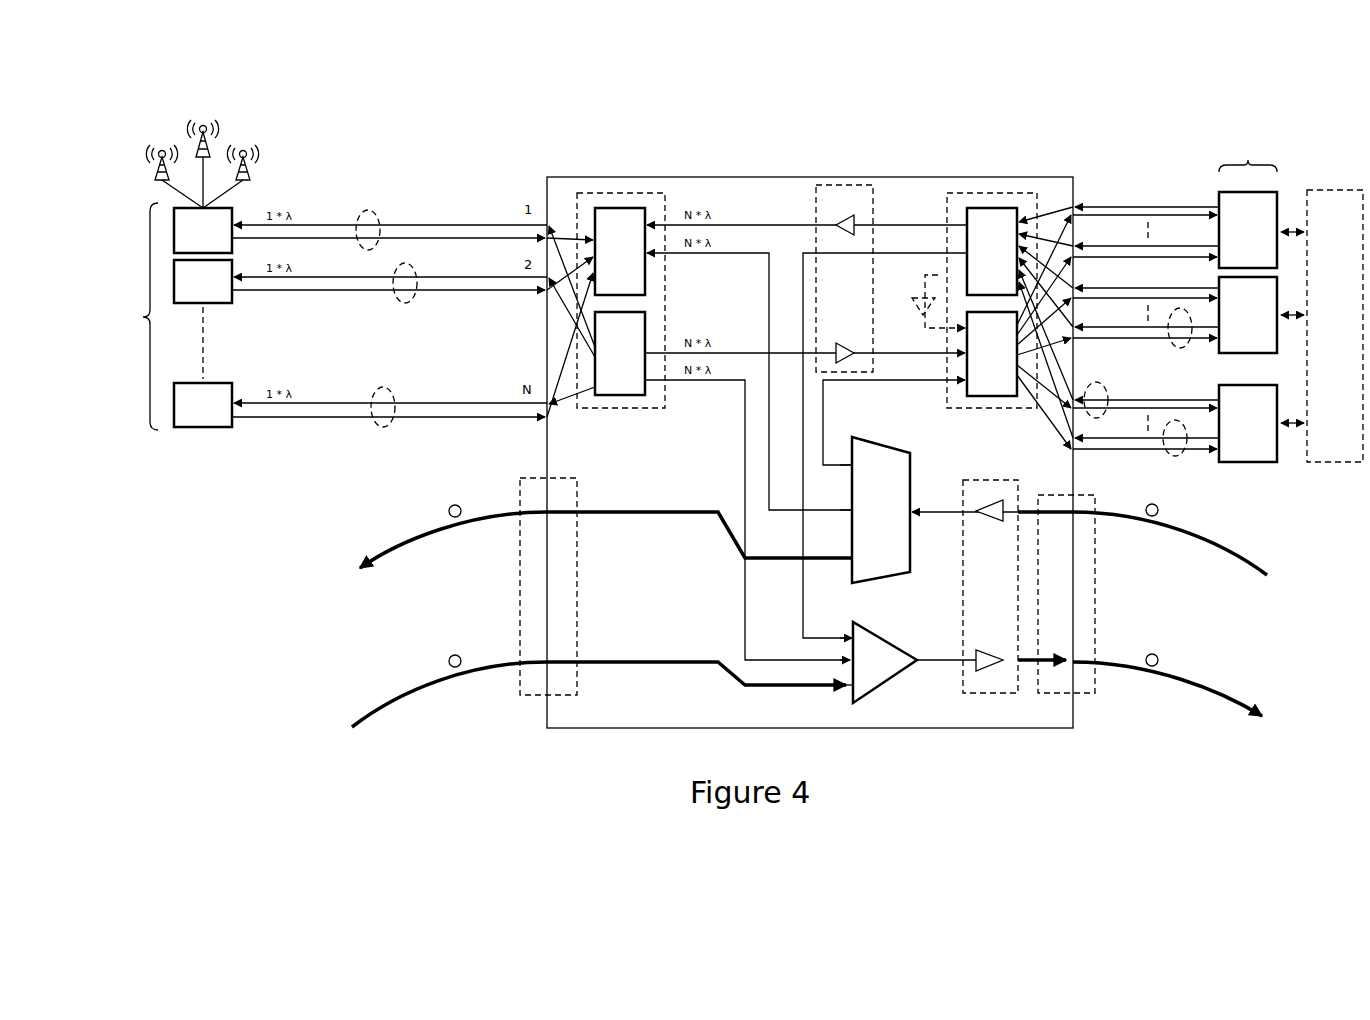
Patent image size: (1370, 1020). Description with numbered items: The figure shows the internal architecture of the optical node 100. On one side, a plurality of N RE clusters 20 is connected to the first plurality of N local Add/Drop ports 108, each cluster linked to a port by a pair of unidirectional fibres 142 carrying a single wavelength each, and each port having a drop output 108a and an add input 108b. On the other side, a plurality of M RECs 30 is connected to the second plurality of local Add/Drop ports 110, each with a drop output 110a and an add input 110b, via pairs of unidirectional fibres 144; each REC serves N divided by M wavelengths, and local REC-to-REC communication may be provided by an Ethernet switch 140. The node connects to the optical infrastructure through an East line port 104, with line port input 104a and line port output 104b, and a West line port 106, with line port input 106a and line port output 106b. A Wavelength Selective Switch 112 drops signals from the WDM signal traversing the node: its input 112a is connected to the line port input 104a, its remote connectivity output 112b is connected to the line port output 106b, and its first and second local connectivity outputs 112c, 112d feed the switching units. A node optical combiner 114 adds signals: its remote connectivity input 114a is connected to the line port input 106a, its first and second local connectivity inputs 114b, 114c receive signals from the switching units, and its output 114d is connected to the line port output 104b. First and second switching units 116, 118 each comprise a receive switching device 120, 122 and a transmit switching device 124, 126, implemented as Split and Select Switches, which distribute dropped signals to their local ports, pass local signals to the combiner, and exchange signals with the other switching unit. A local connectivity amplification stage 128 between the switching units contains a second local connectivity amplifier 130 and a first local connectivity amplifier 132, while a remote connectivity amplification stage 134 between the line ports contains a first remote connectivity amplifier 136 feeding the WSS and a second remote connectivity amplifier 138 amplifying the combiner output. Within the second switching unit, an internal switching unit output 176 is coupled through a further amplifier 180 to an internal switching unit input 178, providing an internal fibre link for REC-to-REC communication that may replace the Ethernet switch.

The RE clusters 20 is at (176, 316).
The RECs 30 is at (1259, 301).
The optical node 100 is at (726, 140).
The East line port 104 is at (1064, 694).
The line port input 104a is at (1077, 514).
The line port output 104b is at (1077, 660).
The West line port 106 is at (521, 696).
The line port input 106a is at (545, 660).
The line port output 106b is at (545, 514).
The first plurality of local Add/Drop ports 108 is at (540, 172).
The drop output 108a is at (546, 222).
The add input 108b is at (546, 292).
The second plurality of local Add/Drop ports 110 is at (1092, 172).
The drop output 110a is at (1075, 460).
The add input 110b is at (1076, 192).
The Wavelength Selective Switch 112 is at (912, 575).
The input of the WSS 112a is at (912, 511).
The remote connectivity output 112b is at (850, 566).
The first local connectivity output 112c is at (851, 520).
The second local connectivity output 112d is at (851, 472).
The node optical combiner 114 is at (888, 682).
The remote connectivity input 114a is at (850, 693).
The first local connectivity input 114b is at (843, 660).
The second local connectivity input 114c is at (850, 634).
The output of the node optical combiner 114d is at (916, 657).
The first switching unit 116 is at (651, 192).
The second switching unit 118 is at (998, 192).
The receive switching device 120 is at (646, 264).
The receive switching device 122 is at (986, 398).
The transmit switching device 124 is at (630, 398).
The transmit switching device 126 is at (969, 212).
The local connectivity amplification stage 128 is at (858, 184).
The second local connectivity amplifier OA1 130 is at (856, 221).
The first local connectivity amplifier OA2 132 is at (846, 362).
The remote connectivity amplification stage 134 is at (980, 694).
The first remote connectivity amplifier OA4 136 is at (976, 517).
The second remote connectivity amplifier OA5 138 is at (976, 667).
The Ethernet switch 140 is at (1348, 190).
The unidirectional fibres 142 is at (373, 211).
The unidirectional fibres 144 is at (1170, 344).
The internal switching unit output 176 is at (964, 274).
The internal switching unit input 178 is at (964, 323).
The amplifier OA3 180 is at (917, 312).